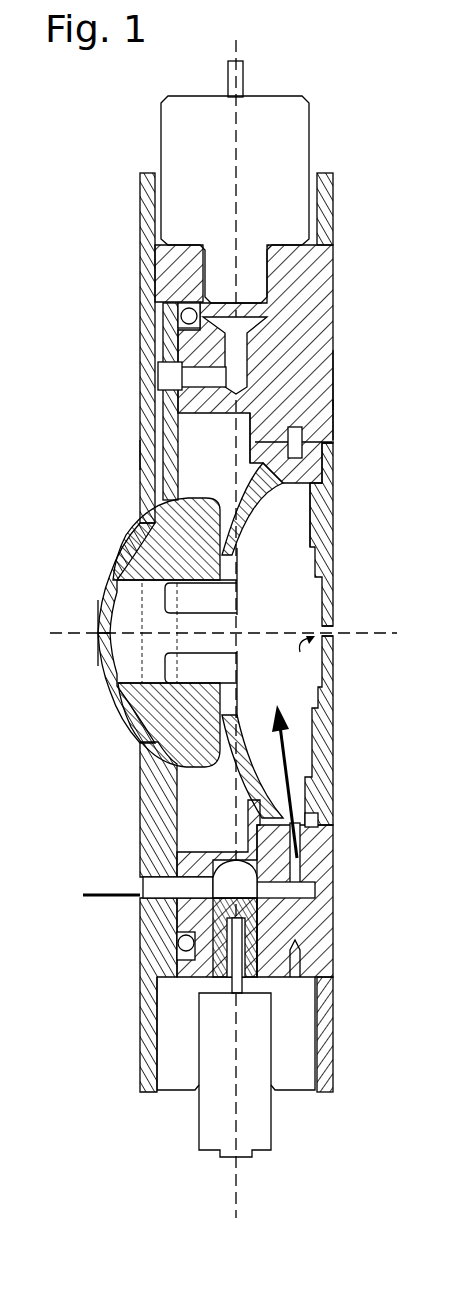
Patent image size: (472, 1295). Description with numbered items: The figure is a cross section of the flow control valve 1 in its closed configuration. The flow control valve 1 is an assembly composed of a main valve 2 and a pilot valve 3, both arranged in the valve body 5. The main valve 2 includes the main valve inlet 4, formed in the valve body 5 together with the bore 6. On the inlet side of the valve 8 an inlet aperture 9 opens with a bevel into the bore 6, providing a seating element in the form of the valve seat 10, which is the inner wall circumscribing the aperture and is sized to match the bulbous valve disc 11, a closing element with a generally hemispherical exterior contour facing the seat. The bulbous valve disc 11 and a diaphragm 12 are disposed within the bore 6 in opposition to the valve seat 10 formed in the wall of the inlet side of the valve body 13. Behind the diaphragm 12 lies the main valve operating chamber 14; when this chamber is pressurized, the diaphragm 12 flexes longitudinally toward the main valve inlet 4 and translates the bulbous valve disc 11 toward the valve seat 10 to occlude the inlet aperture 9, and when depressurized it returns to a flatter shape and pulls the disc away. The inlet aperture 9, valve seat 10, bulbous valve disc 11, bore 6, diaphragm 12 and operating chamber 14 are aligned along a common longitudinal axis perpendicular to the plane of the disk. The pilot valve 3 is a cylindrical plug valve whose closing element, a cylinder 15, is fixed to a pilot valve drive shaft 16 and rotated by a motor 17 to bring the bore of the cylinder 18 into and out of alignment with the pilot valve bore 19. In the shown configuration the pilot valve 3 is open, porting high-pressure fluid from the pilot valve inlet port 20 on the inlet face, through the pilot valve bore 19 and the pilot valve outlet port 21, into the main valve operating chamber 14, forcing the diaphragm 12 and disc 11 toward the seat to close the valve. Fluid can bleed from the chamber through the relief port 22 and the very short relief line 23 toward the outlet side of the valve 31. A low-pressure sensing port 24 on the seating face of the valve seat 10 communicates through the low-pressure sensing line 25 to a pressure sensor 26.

The flow control valve 1 is at (118, 125).
The main valve 2 is at (345, 414).
The pilot valve 3 is at (280, 915).
The main valve inlet 4 is at (100, 545).
The valve body 5 is at (140, 263).
The bore 6 is at (201, 489).
The inlet side of the valve 8 is at (132, 460).
The inlet aperture 9 is at (128, 742).
The valve seat 10 is at (165, 785).
The bulbous valve disc 11 is at (120, 710).
The diaphragm 12 is at (252, 505).
The wall of the inlet side of the valve body 13 is at (140, 335).
The main valve operating chamber 14 is at (262, 547).
The cylinder 15 is at (262, 922).
The pilot valve drive shaft 16 is at (245, 983).
The motor 17 is at (199, 1125).
The bore of the cylinder 18 is at (213, 880).
The pilot valve bore 19 is at (310, 886).
The pilot valve inlet port 20 is at (128, 885).
The pilot valve outlet port 21 is at (300, 765).
The relief port 22 is at (300, 652).
The relief line 23 is at (340, 630).
The low-pressure sensing port 24 is at (150, 507).
The low-pressure sensing line 25 is at (148, 403).
The pressure sensor 26 is at (161, 145).
The outlet side of the valve 31 is at (340, 378).